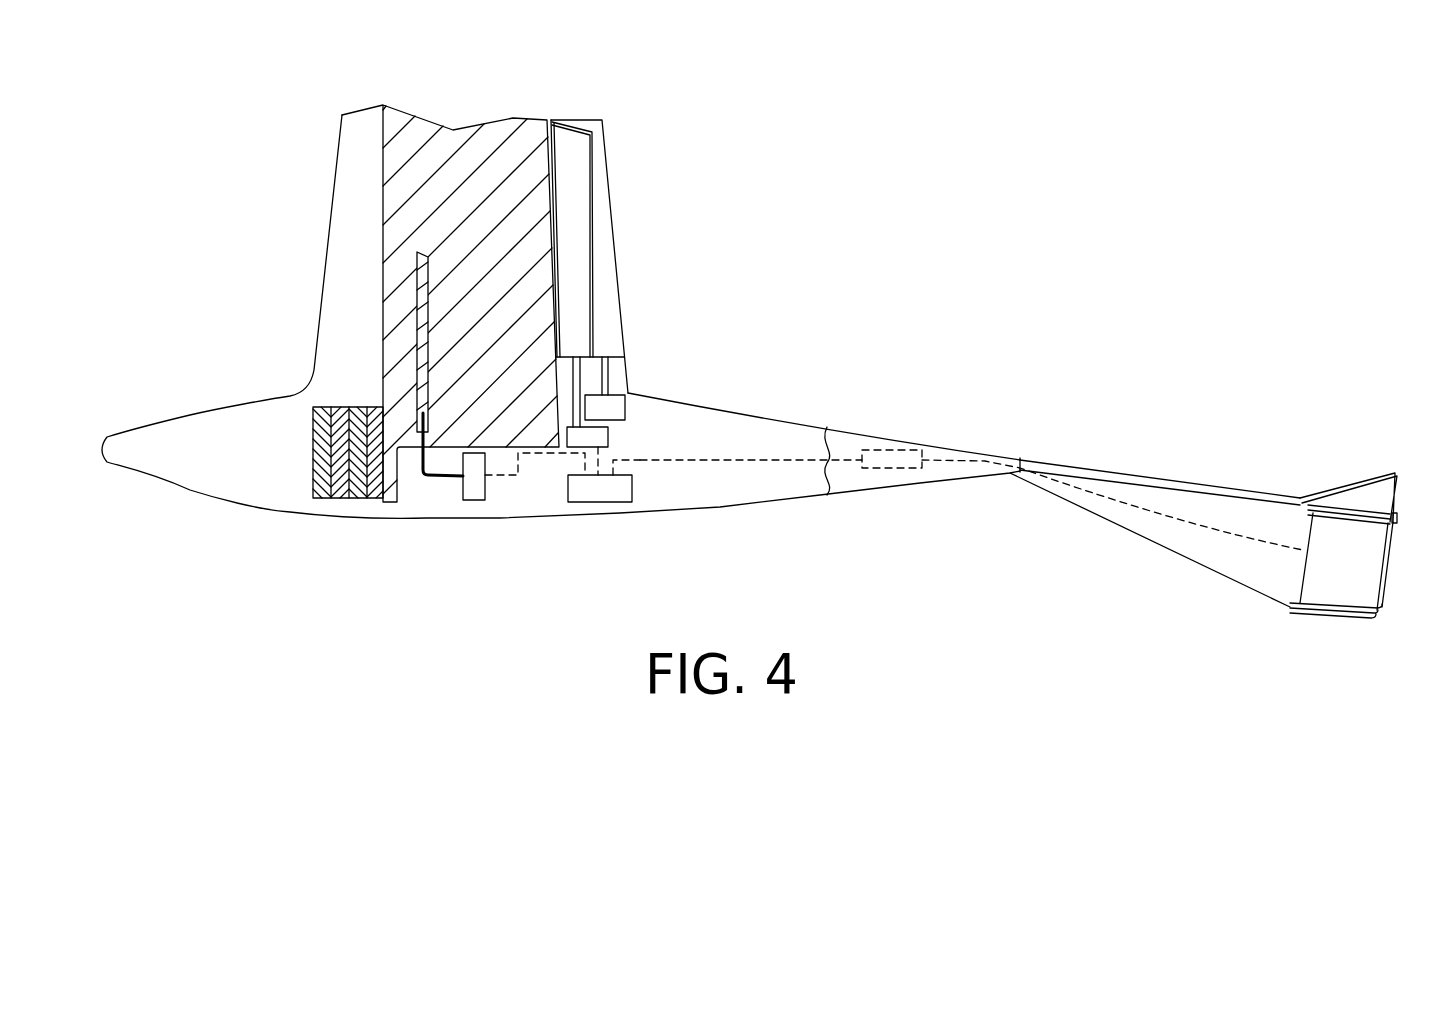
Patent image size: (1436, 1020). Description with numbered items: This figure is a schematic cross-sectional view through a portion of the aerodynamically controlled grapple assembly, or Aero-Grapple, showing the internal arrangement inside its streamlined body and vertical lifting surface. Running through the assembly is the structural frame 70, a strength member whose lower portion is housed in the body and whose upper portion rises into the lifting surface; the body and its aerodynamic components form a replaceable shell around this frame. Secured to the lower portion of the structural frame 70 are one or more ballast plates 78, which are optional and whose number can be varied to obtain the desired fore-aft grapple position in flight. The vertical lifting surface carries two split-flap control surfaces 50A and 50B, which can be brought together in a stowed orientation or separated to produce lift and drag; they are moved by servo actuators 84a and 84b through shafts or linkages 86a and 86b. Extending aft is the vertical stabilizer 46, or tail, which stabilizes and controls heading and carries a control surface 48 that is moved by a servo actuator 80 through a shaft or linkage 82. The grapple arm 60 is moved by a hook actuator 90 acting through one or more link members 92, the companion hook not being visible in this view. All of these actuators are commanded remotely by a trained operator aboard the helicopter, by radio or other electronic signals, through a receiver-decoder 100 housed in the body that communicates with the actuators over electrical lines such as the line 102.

The structural frame 70 is at (458, 137).
The grapple arm 60 is at (422, 318).
The ballast plates 78 is at (310, 480).
The control surface 50B is at (613, 243).
The control surface 50A is at (593, 297).
The shaft or linkage 86a is at (582, 365).
The shaft or linkage 86b is at (610, 375).
The servo actuator 84b is at (620, 403).
The servo actuator 84a is at (598, 438).
The link member 92 is at (433, 477).
The hook actuator 90 is at (475, 502).
The receiver-decoder 100 is at (598, 502).
The electrical line 102 is at (682, 460).
The servo actuator 80 is at (877, 470).
The shaft or linkage 82 is at (1133, 507).
The vertical stabilizer 46 is at (1212, 552).
The control surface 48 is at (1328, 582).